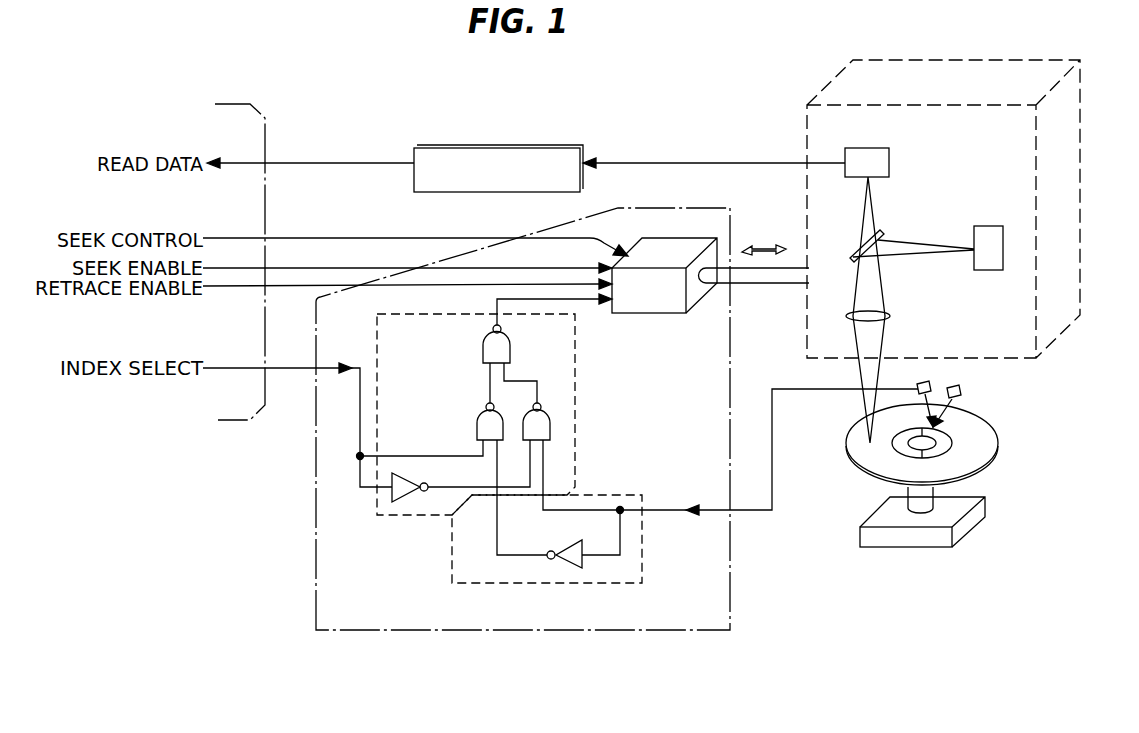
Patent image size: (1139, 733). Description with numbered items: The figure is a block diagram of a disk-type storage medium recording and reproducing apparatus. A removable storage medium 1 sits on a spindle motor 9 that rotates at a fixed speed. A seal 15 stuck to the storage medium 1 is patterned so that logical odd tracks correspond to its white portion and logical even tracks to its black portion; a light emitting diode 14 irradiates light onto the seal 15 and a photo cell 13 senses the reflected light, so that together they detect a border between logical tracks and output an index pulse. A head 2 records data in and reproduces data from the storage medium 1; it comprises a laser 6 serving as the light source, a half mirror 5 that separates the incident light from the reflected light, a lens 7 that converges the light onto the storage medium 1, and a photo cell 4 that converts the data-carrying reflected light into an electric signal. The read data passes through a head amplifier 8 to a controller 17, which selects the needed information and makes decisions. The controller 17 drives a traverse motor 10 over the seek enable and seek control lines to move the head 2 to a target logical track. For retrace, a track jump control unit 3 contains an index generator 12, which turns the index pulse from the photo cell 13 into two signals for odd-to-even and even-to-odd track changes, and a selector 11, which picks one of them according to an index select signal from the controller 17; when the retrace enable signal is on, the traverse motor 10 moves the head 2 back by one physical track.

The storage medium 1 is at (934, 459).
The head 2 is at (1068, 236).
The track jump control unit 3 is at (697, 612).
The photo cell 4 is at (885, 160).
The half mirror 5 is at (880, 236).
The laser 6 is at (1003, 237).
The lens 7 is at (890, 316).
The head amplifier 8 is at (583, 152).
The spindle motor 9 is at (985, 510).
The traverse motor 10 is at (668, 302).
The selector 11 is at (576, 365).
The index generator 12 is at (462, 545).
The photo cell 13 is at (932, 386).
The light emitting diode 14 is at (963, 392).
The seal 15 is at (897, 447).
The controller 17 is at (255, 400).